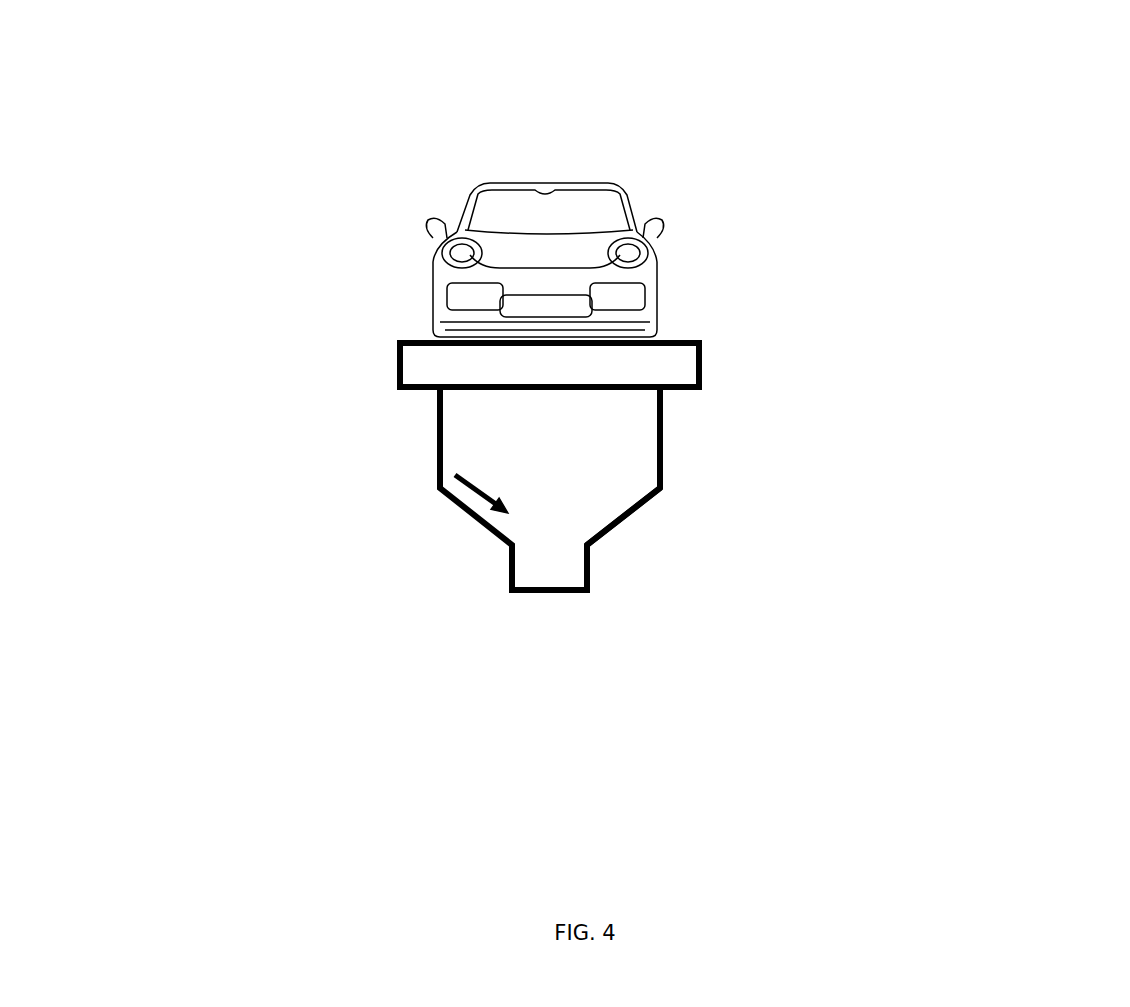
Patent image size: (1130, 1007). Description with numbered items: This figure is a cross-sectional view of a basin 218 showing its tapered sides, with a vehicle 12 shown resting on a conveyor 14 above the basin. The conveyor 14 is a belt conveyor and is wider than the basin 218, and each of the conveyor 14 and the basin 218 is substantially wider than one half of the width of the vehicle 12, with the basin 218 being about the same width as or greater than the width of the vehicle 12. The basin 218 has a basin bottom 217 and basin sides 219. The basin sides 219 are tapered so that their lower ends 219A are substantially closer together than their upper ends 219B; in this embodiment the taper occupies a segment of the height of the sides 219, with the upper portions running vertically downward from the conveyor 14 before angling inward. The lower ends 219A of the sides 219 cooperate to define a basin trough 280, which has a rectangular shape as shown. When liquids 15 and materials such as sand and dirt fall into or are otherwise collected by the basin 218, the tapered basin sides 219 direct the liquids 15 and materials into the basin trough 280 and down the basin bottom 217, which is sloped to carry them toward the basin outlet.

The vehicle 12 is at (547, 167).
The conveyor 14 is at (715, 342).
The liquids 15 is at (475, 483).
The basin bottom 217 is at (550, 595).
The basin 218 is at (770, 477).
The basin sides 219 is at (415, 463).
The lower ends of basin sides 219A is at (492, 572).
The upper ends of basin sides 219B is at (432, 397).
The basin trough 280 is at (543, 560).